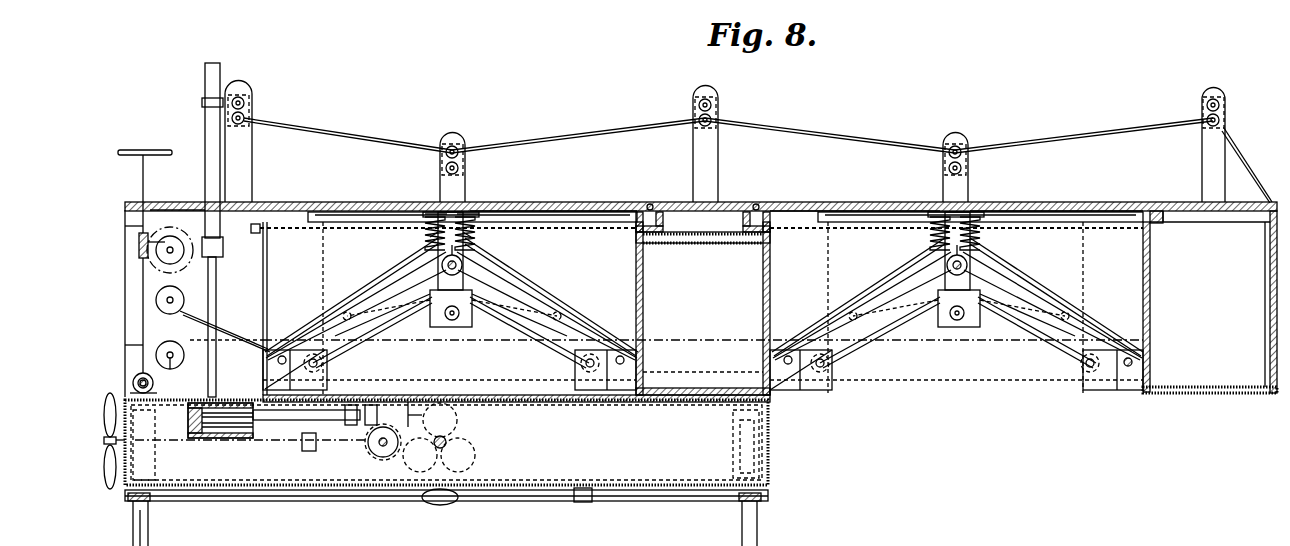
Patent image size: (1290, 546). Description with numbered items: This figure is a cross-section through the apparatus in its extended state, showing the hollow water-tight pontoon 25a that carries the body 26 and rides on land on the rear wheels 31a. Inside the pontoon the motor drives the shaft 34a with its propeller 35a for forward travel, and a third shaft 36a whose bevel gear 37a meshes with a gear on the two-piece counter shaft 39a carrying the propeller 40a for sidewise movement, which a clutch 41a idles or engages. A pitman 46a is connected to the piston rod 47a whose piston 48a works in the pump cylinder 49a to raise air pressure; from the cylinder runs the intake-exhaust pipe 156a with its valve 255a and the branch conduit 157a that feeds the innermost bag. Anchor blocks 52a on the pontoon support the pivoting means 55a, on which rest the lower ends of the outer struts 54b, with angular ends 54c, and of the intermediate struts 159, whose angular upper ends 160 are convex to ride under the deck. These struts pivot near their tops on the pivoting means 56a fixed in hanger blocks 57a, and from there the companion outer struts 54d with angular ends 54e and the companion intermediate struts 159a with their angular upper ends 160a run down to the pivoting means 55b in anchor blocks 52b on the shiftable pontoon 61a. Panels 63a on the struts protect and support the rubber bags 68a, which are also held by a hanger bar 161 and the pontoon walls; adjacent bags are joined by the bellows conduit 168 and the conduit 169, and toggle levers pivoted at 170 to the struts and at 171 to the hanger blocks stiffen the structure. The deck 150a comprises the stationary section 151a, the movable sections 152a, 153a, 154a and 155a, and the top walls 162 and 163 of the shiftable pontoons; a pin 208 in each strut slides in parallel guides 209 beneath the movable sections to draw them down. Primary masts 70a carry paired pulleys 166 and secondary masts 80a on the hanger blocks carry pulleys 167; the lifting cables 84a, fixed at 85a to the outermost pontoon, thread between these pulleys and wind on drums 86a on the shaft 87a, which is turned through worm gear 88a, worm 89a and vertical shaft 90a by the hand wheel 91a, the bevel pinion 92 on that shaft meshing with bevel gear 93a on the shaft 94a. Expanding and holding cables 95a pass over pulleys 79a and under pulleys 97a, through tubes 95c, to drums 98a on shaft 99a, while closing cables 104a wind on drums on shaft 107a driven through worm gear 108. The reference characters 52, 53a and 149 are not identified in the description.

The pontoon 25a is at (768, 470).
The body 26 is at (125, 313).
The rear wheels 31a is at (150, 536).
The shaft 34a is at (448, 438).
The propeller 35a is at (476, 457).
The third shaft 36a is at (370, 455).
The bevel gear 37a is at (422, 498).
The counter shaft 39a is at (250, 455).
The propeller 40a is at (134, 376).
The clutch 41a is at (305, 451).
The pitman 46a is at (408, 404).
The piston rod 47a is at (330, 412).
The piston 48a is at (188, 418).
The pump cylinder 49a is at (215, 442).
The lower beam 52 is at (790, 393).
The anchor blocks 52a is at (1130, 393).
The anchor blocks 52b is at (630, 403).
The brace 53a is at (280, 382).
The outer struts 54b is at (430, 214).
The angular ends 54c is at (440, 214).
The companion outer struts 54d is at (470, 198).
The angular ends 54e is at (482, 200).
The pivoting means 55a is at (263, 372).
The pivoting means 55b is at (700, 356).
The pivoting means 56a is at (442, 265).
The hanger blocks 57a is at (440, 328).
The shiftable pontoon 61a is at (636, 274).
The panels 63a is at (320, 318).
The rubber bags 68a is at (263, 289).
The primary masts 70a is at (248, 88).
The pulleys 79a is at (458, 328).
The secondary masts 80a is at (442, 138).
The lifting cables 84a is at (590, 136).
The cable fixing point 85a is at (1262, 196).
The drums 86a is at (180, 266).
The longitudinal shaft 87a is at (160, 252).
The worm gear 88a is at (172, 236).
The worm 89a is at (139, 243).
The vertical shaft 90a is at (141, 226).
The hand wheel 91a is at (143, 150).
The bevel pinion 92 is at (125, 345).
The bevel gear 93a is at (154, 389).
The longitudinal shaft 94a is at (154, 380).
The expanding and holding cables 95a is at (575, 362).
The tubes 95c is at (735, 370).
The pulleys 97a is at (345, 350).
The drums 98a is at (172, 313).
The longitudinal shaft 99a is at (174, 300).
The closing cables 104a is at (240, 339).
The longitudinal shaft 107a is at (175, 354).
The worm gear 108 is at (172, 362).
The rod 149 is at (390, 316).
The deck 150a is at (126, 201).
The stationary deck section 151a is at (176, 201).
The movable deck section 152a is at (326, 201).
The movable deck section 153a is at (612, 201).
The movable deck section 154a is at (830, 201).
The movable deck section 155a is at (1128, 201).
The intake-exhaust pipe 156a is at (205, 127).
The branch conduit 157a is at (268, 258).
The intermediate struts 159 is at (380, 278).
The companion intermediate struts 159a is at (520, 278).
The angular upper ends 160 is at (420, 238).
The angular upper ends 160a is at (485, 240).
The hanger bar 161 is at (252, 226).
The top wall 162 is at (742, 201).
The top wall 163 is at (1172, 201).
The pulleys 166 is at (246, 108).
The pulleys 167 is at (462, 146).
The bellows conduit 168 is at (462, 255).
The conduit 169 is at (945, 190).
The toggle lever pivot 170 is at (1088, 290).
The toggle lever pivot 171 is at (418, 306).
The pin 208 is at (423, 213).
The guides 209 is at (345, 212).
The valve 255a is at (203, 100).